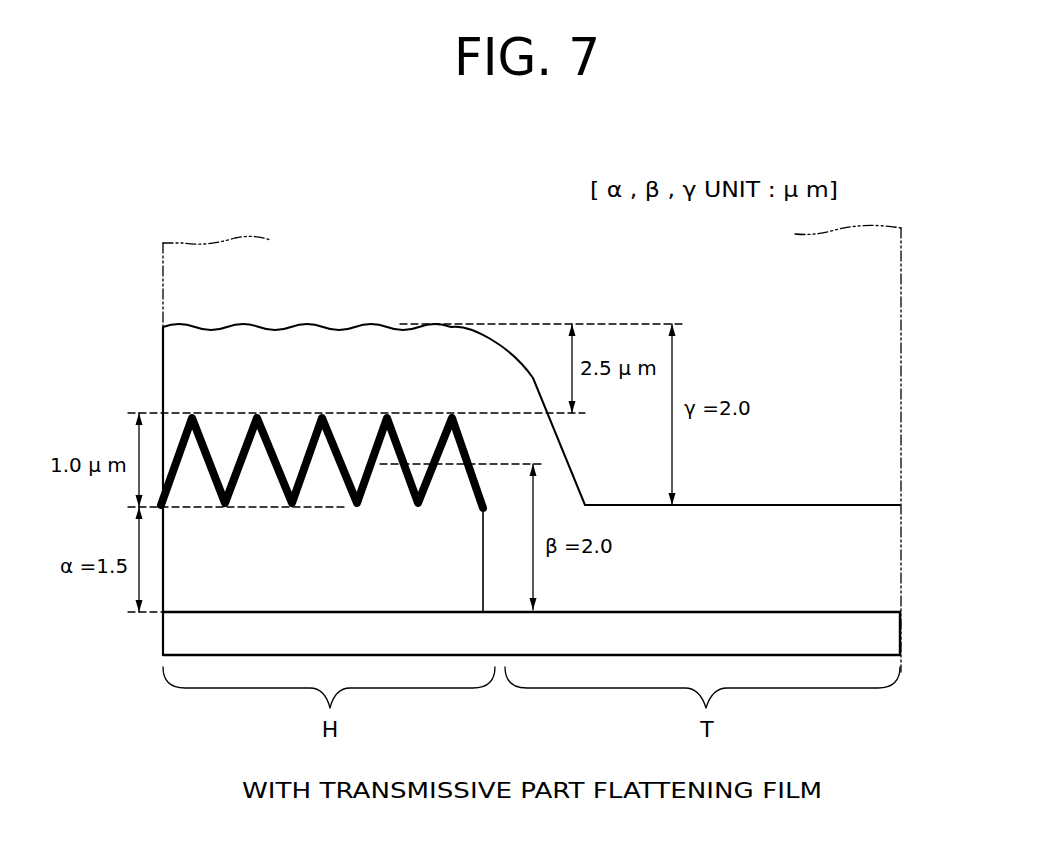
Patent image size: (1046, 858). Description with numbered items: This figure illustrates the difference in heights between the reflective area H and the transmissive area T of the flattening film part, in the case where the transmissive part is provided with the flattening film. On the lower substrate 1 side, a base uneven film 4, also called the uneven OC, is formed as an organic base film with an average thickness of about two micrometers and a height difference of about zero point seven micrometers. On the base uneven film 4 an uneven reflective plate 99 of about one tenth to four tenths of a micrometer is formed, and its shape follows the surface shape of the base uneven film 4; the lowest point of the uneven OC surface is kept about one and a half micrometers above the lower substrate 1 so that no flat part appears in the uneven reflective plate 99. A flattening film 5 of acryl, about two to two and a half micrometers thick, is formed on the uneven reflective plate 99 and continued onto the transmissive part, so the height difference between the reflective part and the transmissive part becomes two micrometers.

The lower substrate 1 is at (902, 633).
The base uneven film 4 is at (196, 590).
The flattening film 5 is at (182, 355).
The uneven reflective plate 99 is at (176, 422).